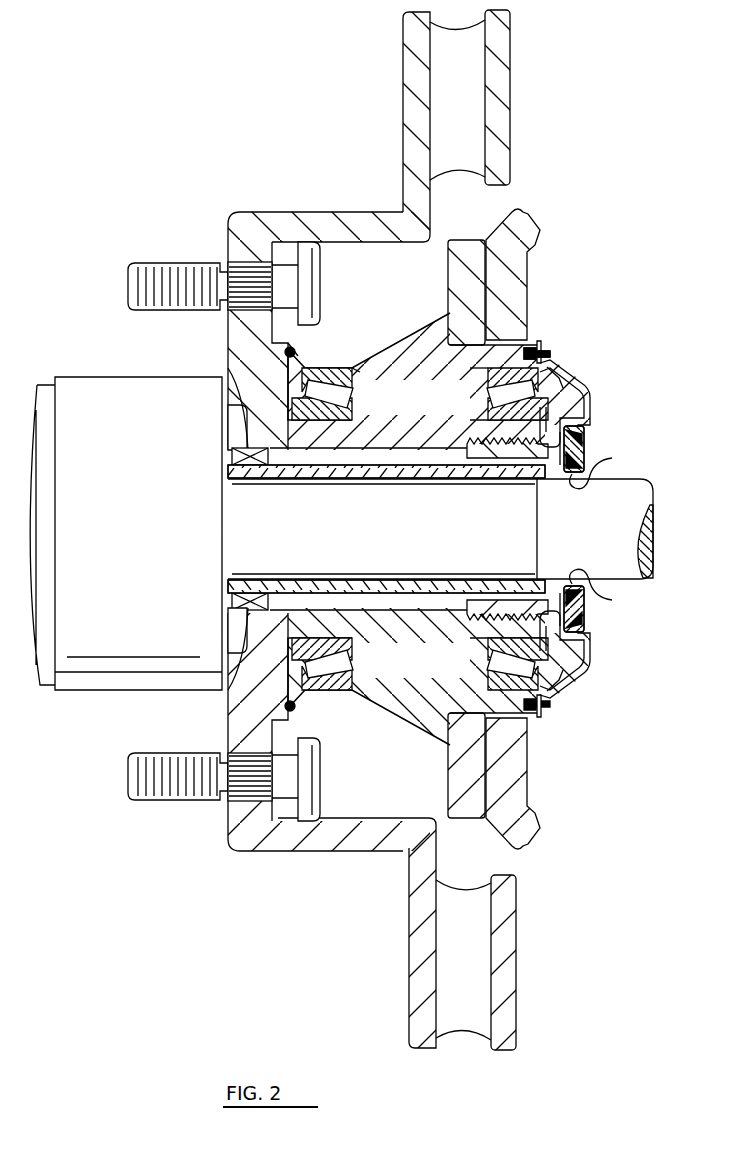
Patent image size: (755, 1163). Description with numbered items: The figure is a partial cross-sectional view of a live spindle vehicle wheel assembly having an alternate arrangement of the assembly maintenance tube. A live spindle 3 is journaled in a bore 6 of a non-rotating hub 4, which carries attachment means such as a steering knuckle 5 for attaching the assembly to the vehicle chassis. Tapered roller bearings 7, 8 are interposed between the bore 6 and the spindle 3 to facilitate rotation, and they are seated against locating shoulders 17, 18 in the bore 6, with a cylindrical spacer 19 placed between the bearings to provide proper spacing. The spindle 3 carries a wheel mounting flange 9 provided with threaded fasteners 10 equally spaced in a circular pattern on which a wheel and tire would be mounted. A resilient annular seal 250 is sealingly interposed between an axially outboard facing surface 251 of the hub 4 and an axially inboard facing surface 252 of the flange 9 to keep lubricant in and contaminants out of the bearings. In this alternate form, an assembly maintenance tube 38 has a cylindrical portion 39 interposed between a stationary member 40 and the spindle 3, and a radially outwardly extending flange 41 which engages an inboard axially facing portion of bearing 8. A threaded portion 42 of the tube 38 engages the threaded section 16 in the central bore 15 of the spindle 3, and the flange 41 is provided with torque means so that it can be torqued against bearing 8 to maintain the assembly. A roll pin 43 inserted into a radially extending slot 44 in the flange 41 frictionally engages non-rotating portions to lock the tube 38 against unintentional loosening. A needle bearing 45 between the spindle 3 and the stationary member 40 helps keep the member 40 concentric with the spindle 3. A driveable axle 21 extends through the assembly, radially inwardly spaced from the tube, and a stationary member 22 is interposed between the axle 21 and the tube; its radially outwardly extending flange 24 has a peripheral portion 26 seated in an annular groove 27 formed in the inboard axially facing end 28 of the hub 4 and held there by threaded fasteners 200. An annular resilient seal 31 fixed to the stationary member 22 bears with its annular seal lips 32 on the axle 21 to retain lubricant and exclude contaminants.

The live spindle 3 is at (383, 430).
The non-rotating hub 4 is at (458, 243).
The steering knuckle 5 is at (528, 228).
The bore 6 is at (375, 712).
The tapered roller bearing 7 is at (352, 398).
The tapered roller bearing 8 is at (485, 398).
The wheel mounting flange 9 is at (245, 212).
The threaded fasteners 10 is at (163, 265).
The central bore 15 is at (432, 602).
The threaded section 16 is at (548, 367).
The shoulder 17 is at (353, 368).
The shoulder 18 is at (460, 362).
The cylindrical spacer 19 is at (390, 656).
The driveable axle 21 is at (636, 507).
The stationary member 22 is at (590, 676).
The flange 24 is at (588, 378).
The peripheral portion 26 is at (552, 712).
The annular shoulder or groove 27 is at (540, 345).
The inboard axially facing end 28 is at (547, 343).
The annular resilient seal 31 is at (592, 624).
The annular seal lips 32 is at (612, 458).
The assembly maintenance tube 38 is at (585, 428).
The cylindrical portion 39 is at (490, 455).
The stationary member 40 is at (600, 556).
The flange 41 is at (590, 392).
The threaded portion 42 is at (586, 606).
The roll pin 43 is at (558, 682).
The radially extending slot 44 is at (578, 653).
The needle bearing 45 is at (235, 380).
The threaded fasteners 200 is at (551, 350).
The resilient annular seal 250 is at (286, 706).
The axially outboard facing surface 251 is at (298, 352).
The axially inboard facing surface 252 is at (286, 350).